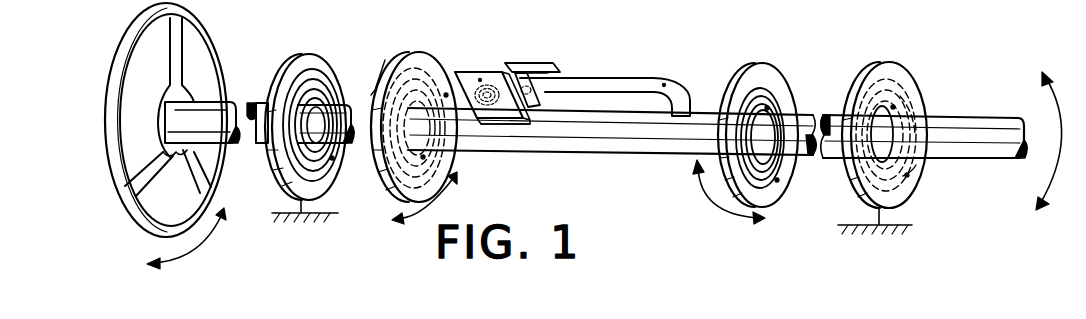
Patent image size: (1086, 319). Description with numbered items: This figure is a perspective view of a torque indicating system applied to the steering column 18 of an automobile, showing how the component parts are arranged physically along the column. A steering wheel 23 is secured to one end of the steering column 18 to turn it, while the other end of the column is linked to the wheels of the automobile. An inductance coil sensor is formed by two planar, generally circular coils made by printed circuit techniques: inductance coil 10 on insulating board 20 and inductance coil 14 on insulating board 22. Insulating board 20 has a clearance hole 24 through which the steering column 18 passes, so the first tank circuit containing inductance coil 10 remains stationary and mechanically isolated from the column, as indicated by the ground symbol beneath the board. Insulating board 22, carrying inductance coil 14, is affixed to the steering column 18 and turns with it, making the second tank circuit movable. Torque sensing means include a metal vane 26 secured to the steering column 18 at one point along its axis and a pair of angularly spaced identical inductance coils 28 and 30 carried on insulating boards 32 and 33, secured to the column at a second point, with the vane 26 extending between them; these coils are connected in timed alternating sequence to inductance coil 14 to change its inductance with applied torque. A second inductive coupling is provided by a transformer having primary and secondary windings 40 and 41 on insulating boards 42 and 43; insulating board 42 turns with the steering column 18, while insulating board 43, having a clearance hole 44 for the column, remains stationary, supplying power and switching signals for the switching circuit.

The inductance coil 10 is at (332, 85).
The inductance coil 14 is at (384, 75).
The steering column 18 is at (600, 150).
The insulating board 20 is at (300, 54).
The insulating board 22 is at (413, 52).
The steering wheel 23 is at (125, 48).
The clearance hole 24 is at (279, 165).
The metal vane 26 is at (607, 86).
The inductance coil 28 is at (487, 100).
The inductance coil 30 is at (528, 74).
The insulating board 32 is at (512, 122).
The insulating board 33 is at (511, 70).
The primary winding 40 is at (773, 98).
The secondary winding 41 is at (916, 90).
The insulating board 42 is at (786, 192).
The insulating board 43 is at (908, 178).
The clearance hole 44 is at (878, 98).